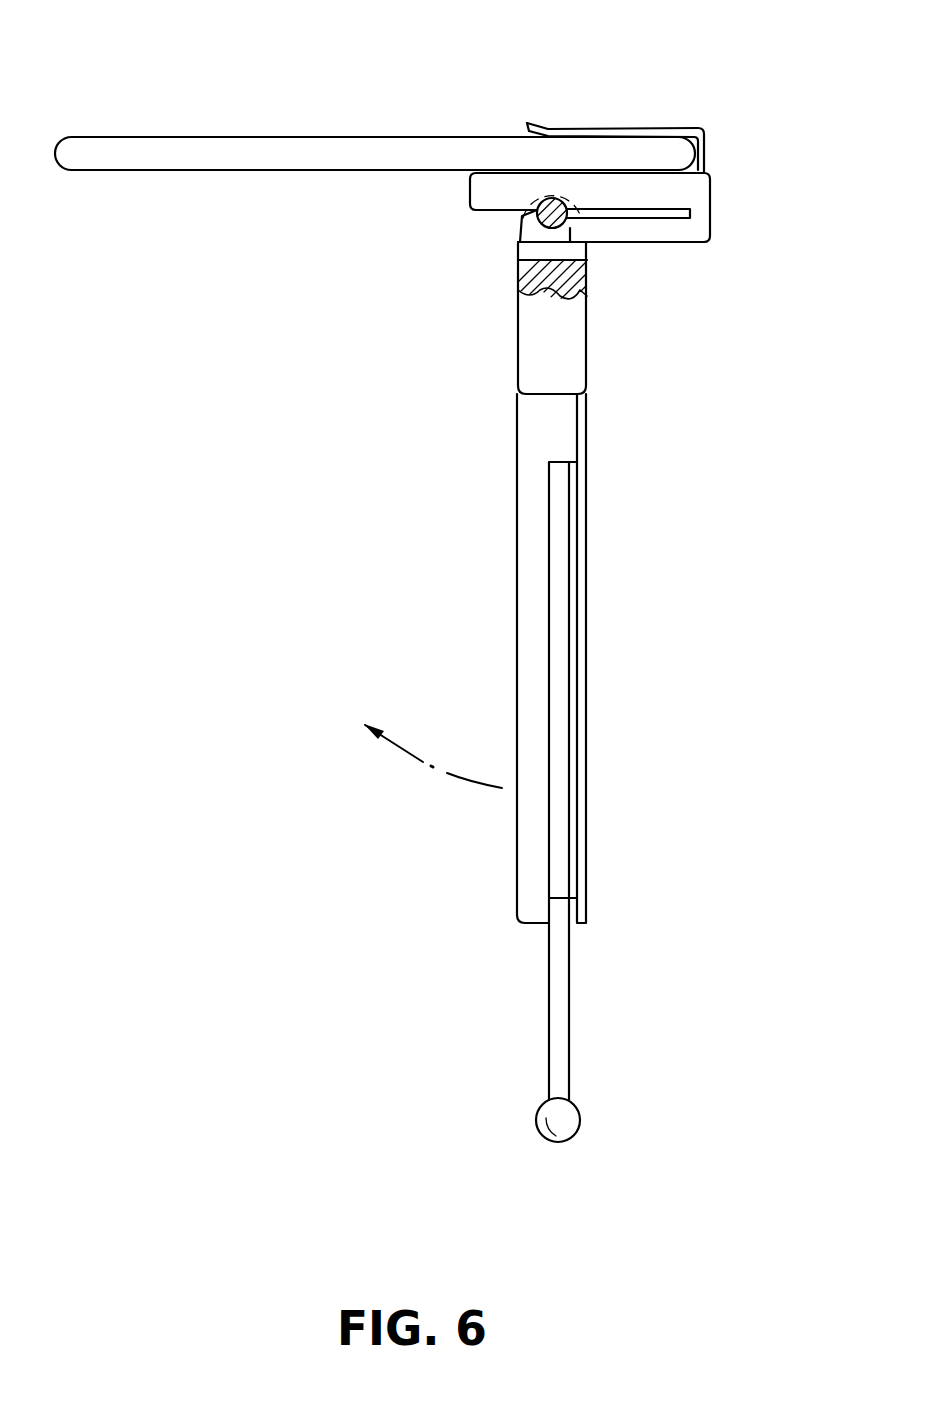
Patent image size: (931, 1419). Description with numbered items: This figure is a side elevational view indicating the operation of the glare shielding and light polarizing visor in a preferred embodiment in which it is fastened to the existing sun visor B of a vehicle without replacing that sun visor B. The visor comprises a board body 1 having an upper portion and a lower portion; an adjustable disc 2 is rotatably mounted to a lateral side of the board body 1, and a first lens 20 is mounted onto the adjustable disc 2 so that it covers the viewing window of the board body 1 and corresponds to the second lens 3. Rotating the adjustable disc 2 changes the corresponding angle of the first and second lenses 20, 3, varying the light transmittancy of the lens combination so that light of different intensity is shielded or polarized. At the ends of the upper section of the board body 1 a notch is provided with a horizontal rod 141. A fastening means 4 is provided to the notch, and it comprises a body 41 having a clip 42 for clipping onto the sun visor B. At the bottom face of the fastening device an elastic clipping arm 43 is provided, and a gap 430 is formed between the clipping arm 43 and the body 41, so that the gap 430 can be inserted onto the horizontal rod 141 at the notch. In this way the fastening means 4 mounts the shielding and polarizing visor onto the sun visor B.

The sun visor B is at (268, 138).
The board body 1 is at (518, 330).
The adjustable disc 2 is at (548, 977).
The second lens 3 is at (582, 589).
The first lens 20 is at (570, 675).
The fastening means 4 is at (712, 185).
The body 41 is at (577, 185).
The clip 42 is at (601, 128).
The elastic clipping arm 43 is at (528, 229).
The gap 430 is at (585, 245).
The horizontal rod 141 is at (550, 200).